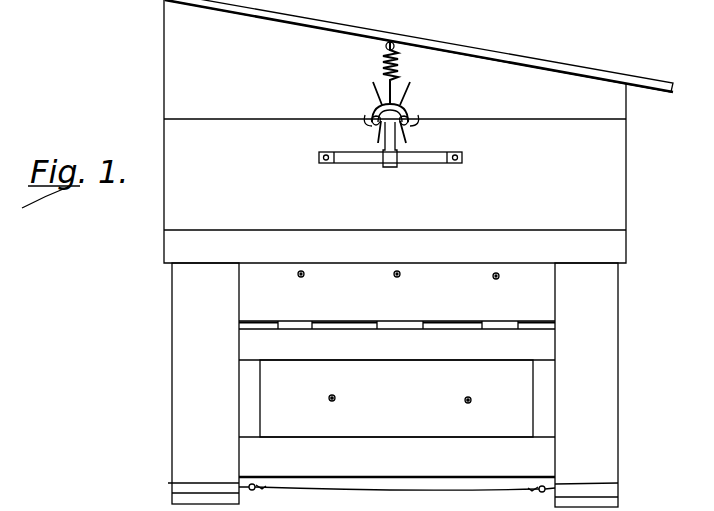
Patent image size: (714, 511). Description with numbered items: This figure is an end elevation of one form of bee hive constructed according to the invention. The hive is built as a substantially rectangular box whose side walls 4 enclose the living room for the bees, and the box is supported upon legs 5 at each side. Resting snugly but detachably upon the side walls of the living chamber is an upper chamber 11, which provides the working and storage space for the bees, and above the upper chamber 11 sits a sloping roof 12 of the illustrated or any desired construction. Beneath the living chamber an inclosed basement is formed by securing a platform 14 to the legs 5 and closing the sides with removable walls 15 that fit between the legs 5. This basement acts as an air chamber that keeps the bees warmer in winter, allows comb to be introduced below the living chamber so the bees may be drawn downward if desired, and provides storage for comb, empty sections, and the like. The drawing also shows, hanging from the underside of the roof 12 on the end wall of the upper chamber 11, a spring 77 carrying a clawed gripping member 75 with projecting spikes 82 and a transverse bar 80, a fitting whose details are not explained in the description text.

The side wall 4 is at (397, 315).
The leg 5 is at (393, 385).
The upper chamber 11 is at (522, 207).
The roof 12 is at (558, 62).
The platform 14 is at (452, 487).
The removable wall 15 is at (397, 418).
The gripping jaws 75 is at (410, 108).
The spring 77 is at (383, 58).
The bar 80 is at (383, 150).
The spikes 82 is at (375, 88).